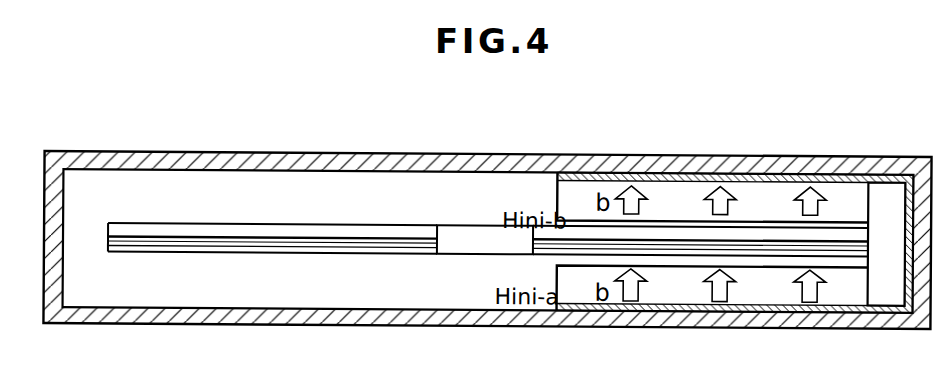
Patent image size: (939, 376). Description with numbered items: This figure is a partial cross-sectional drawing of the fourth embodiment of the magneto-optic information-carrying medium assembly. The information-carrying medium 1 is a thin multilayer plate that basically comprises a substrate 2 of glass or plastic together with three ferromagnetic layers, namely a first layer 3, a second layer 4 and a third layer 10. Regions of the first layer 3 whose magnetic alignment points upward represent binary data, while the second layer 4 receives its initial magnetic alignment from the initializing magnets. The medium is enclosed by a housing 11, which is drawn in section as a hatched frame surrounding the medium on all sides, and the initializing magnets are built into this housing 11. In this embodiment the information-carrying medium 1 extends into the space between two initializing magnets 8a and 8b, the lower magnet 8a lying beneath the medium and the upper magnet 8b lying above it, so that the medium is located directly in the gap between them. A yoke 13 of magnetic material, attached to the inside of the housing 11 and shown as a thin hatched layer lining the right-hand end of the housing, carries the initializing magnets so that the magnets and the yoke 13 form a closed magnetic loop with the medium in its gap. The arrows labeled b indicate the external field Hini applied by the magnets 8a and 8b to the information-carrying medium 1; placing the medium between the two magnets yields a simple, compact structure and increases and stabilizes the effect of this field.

The information-carrying medium 1 is at (473, 241).
The substrate 2 is at (108, 226).
The first layer 3 is at (108, 239).
The second layer 4 is at (108, 246).
The third layer 10 is at (108, 254).
The housing 11 is at (537, 153).
The yoke 13 is at (555, 177).
The initializing magnet 8a is at (556, 270).
The initializing magnet 8b is at (556, 197).